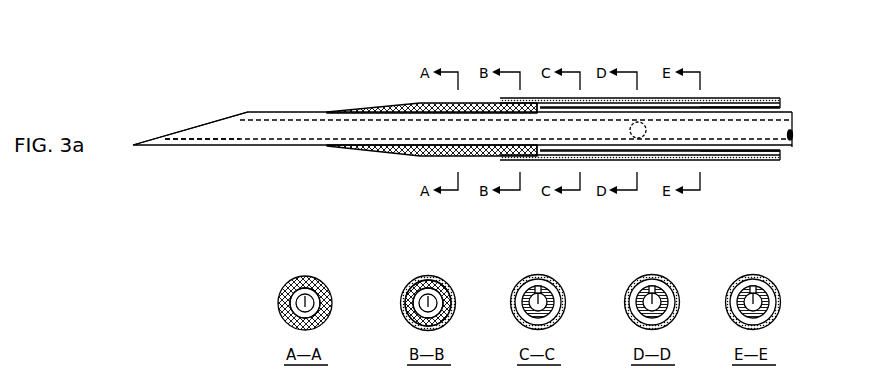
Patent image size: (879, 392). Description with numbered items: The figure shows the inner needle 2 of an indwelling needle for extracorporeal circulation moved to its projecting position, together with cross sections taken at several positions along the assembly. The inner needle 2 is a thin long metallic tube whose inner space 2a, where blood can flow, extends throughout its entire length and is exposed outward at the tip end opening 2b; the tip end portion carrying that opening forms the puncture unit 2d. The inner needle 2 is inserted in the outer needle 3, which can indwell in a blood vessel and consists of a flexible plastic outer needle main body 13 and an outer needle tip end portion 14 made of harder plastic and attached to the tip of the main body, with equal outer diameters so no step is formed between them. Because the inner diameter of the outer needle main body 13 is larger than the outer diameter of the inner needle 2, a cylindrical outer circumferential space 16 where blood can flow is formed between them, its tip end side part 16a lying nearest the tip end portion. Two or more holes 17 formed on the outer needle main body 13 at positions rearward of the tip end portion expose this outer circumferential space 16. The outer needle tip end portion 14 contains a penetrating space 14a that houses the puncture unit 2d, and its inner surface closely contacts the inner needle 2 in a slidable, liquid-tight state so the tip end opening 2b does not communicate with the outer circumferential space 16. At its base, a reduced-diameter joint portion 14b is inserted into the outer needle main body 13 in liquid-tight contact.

The inner needle 2 is at (342, 138).
The inner space 2a is at (709, 132).
The tip end opening 2b is at (188, 128).
The puncture unit 2d is at (215, 134).
The outer needle 3 is at (753, 96).
The outer needle main body 13 is at (662, 99).
The outer needle tip end portion 14 is at (390, 102).
The penetrating space 14a is at (460, 127).
The joint portion 14b is at (527, 108).
The outer circumferential space 16 is at (740, 129).
The tip end side part of outer circumferential space 16a is at (572, 330).
The holes 17 is at (640, 122).